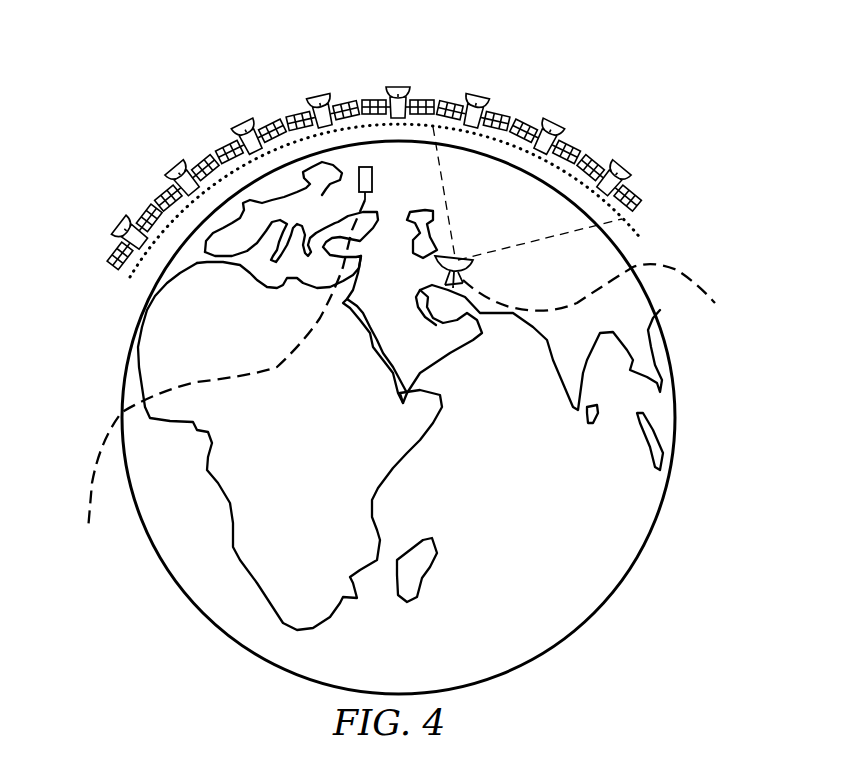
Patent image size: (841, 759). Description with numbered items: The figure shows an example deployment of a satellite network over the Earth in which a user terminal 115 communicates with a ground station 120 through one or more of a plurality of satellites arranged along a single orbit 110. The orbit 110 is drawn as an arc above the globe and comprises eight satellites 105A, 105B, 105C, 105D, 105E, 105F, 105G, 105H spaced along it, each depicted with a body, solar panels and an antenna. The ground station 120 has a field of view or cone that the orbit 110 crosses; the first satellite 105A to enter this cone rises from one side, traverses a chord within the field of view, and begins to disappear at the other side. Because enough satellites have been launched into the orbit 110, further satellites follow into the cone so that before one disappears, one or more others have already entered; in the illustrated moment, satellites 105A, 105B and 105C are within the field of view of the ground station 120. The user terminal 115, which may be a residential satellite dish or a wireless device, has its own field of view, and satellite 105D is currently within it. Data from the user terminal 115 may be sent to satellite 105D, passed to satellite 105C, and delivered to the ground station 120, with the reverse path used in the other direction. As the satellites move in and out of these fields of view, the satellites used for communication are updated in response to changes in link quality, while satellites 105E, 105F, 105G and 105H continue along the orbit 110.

The satellite 105A is at (614, 170).
The satellite 105B is at (549, 124).
The satellite 105C is at (474, 96).
The satellite 105D is at (398, 90).
The satellite 105E is at (324, 98).
The satellite 105F is at (254, 127).
The satellite 105G is at (180, 173).
The satellite 105H is at (122, 228).
The orbit 110 is at (631, 226).
The user terminal 115 is at (93, 483).
The ground station 120 is at (677, 270).